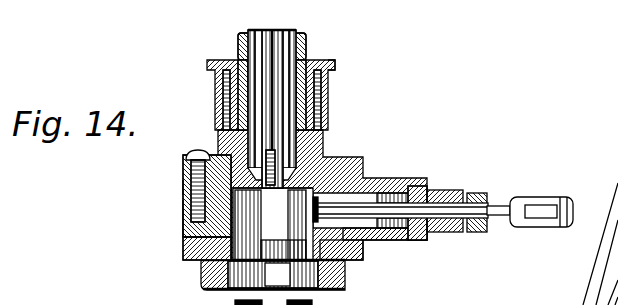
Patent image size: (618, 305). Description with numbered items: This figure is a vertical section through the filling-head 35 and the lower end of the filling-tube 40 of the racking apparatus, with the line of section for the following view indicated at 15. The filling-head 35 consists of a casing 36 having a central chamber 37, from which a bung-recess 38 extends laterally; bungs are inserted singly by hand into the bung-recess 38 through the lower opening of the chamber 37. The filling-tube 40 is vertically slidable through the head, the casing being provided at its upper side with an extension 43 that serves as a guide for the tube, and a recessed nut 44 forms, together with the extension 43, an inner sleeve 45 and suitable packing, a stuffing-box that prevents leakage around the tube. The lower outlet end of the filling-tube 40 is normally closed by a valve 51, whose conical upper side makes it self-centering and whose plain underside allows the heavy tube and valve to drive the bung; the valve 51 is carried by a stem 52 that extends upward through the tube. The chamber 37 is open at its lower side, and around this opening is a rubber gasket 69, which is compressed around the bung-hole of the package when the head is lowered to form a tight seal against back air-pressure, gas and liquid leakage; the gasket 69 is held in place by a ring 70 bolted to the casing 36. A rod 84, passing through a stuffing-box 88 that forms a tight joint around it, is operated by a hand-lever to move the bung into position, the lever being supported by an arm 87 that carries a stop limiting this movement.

The section line 15 is at (180, 187).
The filling-head 35 is at (158, 227).
The casing 36 is at (182, 207).
The central chamber 37 is at (270, 225).
The bung-recess 38 is at (375, 243).
The filling-tube 40 is at (305, 42).
The extension 43 is at (333, 148).
The recessed nut 44 is at (337, 95).
The inner sleeve 45 is at (232, 105).
The valve 51 is at (293, 224).
The stem 52 is at (262, 36).
The gasket 69 is at (347, 278).
The ring 70 is at (184, 252).
The rod 84 is at (410, 190).
The arm 87 is at (493, 295).
The stuffing-box 88 is at (493, 180).